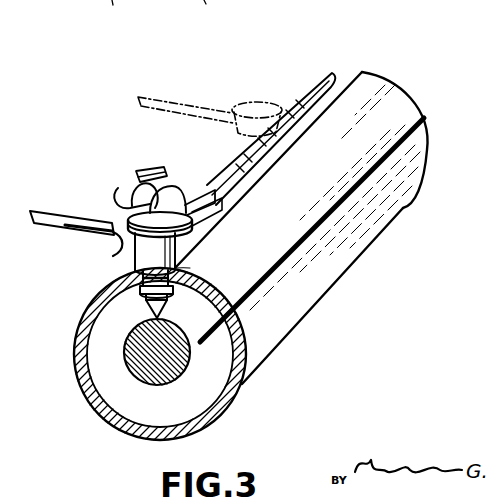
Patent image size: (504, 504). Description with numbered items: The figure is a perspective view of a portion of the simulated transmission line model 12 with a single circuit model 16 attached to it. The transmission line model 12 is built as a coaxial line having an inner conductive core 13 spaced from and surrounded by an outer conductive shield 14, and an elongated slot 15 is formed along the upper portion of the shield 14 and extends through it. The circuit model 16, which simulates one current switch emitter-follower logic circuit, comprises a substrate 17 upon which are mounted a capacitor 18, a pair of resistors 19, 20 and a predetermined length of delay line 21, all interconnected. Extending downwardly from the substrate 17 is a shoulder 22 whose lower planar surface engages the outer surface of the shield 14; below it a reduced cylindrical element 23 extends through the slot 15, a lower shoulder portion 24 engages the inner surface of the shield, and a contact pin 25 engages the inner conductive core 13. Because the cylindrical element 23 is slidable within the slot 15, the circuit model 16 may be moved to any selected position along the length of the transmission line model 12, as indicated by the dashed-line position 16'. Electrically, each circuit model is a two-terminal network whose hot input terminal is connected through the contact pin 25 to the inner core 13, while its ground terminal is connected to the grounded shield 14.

The simulated transmission line model 12 is at (392, 243).
The inner conductive core 13 is at (152, 385).
The outer conductive shield 14 is at (256, 364).
The elongated slot 15 is at (293, 102).
The circuit model 16 is at (123, 243).
The circuit model in displaced position 16' is at (210, 96).
The substrate 17 is at (117, 246).
The capacitor 18 is at (138, 171).
The resistor 19 is at (120, 200).
The resistor 20 is at (184, 210).
The delay line 21 is at (70, 208).
The shoulder 22 is at (120, 264).
The reduced cylindrical element 23 is at (182, 265).
The lower shoulder portion 24 is at (139, 298).
The contact pin 25 is at (147, 318).